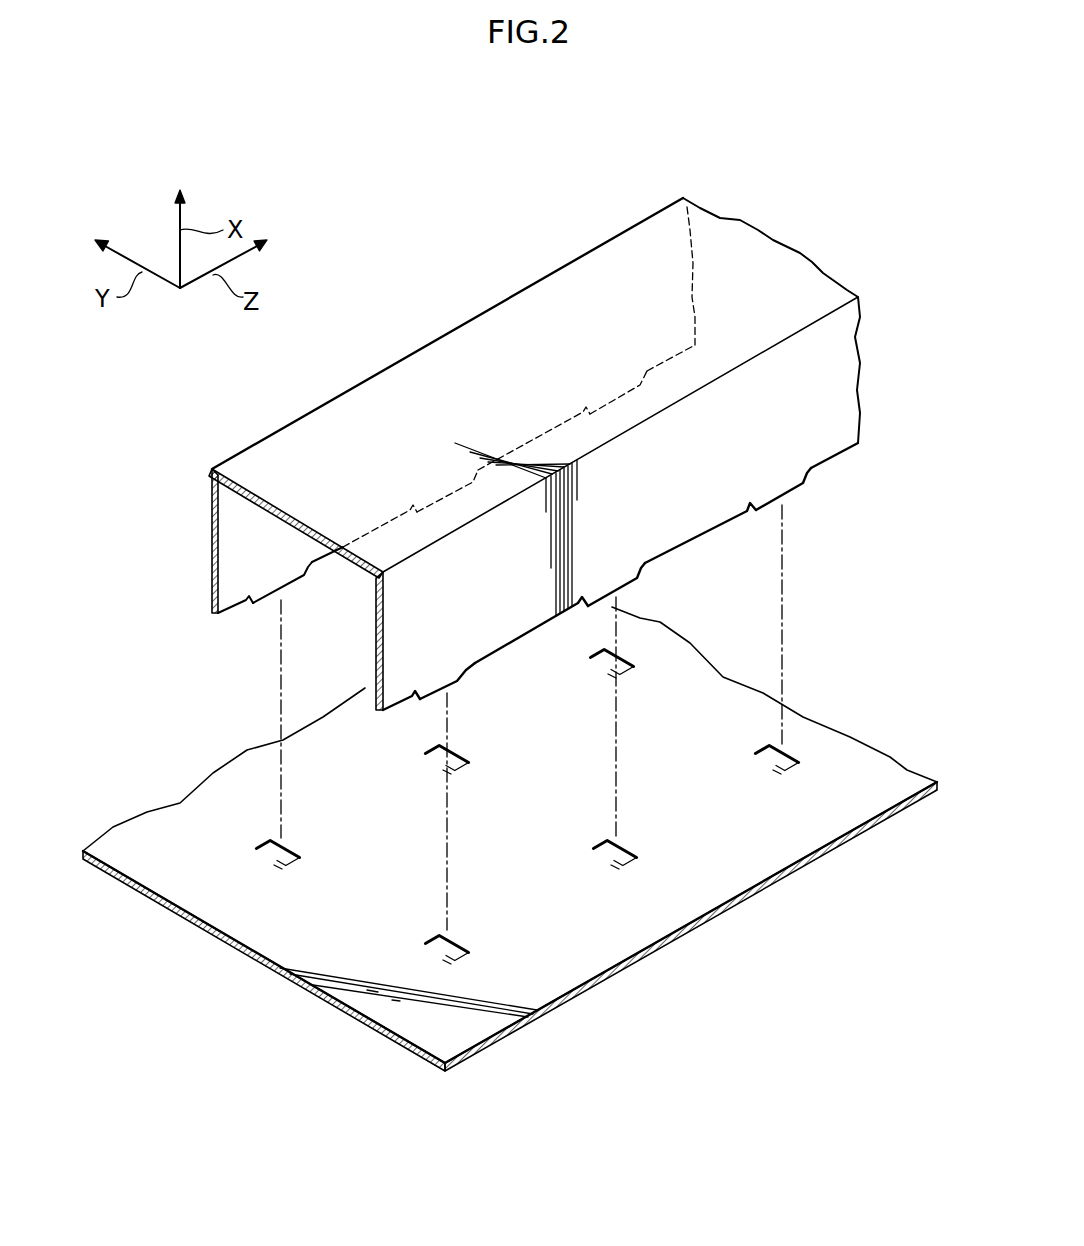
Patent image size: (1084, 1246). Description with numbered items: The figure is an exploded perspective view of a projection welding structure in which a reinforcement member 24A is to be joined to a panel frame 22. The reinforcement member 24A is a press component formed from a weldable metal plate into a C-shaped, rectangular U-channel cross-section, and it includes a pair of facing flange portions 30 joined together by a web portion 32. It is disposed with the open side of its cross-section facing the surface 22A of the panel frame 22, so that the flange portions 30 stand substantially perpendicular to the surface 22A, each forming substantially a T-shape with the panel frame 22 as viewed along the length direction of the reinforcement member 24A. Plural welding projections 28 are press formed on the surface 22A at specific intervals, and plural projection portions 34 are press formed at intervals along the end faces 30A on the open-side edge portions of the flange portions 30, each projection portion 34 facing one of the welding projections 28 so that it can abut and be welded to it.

The reinforcement member 24A is at (492, 445).
The web portion 32 is at (340, 423).
The flange portions 30 is at (491, 475).
The end faces 30A is at (233, 612).
The projection portions 34 is at (288, 585).
The welding projections 28 is at (290, 843).
The panel frame 22 is at (510, 839).
The surface 22A is at (633, 932).